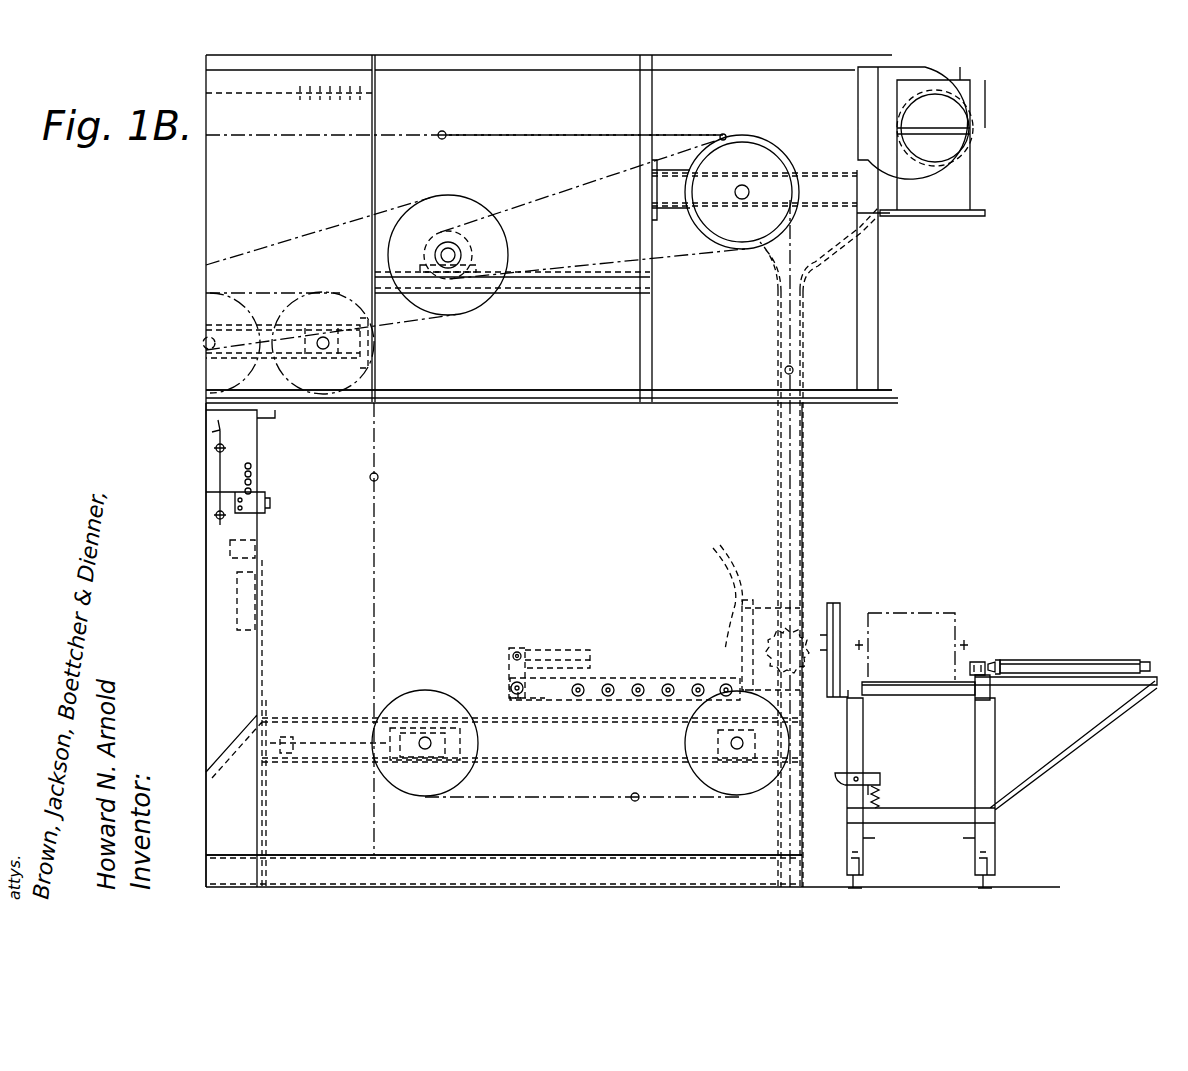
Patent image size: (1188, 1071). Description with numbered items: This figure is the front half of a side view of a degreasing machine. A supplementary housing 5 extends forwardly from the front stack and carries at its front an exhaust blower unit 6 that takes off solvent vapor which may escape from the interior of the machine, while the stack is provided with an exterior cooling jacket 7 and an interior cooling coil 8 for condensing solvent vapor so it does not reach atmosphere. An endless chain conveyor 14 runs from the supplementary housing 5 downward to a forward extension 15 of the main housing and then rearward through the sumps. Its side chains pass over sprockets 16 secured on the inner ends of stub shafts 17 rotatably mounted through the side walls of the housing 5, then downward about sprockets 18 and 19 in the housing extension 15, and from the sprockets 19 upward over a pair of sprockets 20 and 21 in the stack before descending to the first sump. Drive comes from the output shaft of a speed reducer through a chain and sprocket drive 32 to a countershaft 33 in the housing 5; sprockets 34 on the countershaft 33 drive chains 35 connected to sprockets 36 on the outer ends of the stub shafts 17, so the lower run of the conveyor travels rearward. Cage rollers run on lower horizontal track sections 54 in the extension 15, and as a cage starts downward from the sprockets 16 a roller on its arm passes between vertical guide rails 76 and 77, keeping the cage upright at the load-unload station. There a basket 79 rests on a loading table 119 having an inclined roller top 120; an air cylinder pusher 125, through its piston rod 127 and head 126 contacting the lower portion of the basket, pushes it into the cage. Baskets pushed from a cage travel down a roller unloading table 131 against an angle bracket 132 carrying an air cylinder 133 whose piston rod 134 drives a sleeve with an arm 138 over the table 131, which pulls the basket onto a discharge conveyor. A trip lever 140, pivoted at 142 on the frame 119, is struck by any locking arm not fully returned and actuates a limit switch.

The supplementary housing 5 is at (880, 272).
The exhaust blower unit 6 is at (985, 80).
The exterior cooling jacket 7 is at (268, 492).
The interior cooling coil 8 is at (255, 486).
The endless chain conveyor 14 is at (544, 130).
The forward extension of housing 15 is at (673, 405).
The sprockets 16 is at (756, 158).
The stub shafts 17 is at (748, 199).
The sprockets 18 is at (706, 796).
The sprockets 19 is at (452, 796).
The sprockets 20 is at (326, 296).
The sprockets 21 is at (226, 297).
The chain and sprocket drive 32 is at (330, 230).
The countershaft 33 is at (462, 258).
The sprockets 34 is at (456, 198).
The chains 35 is at (604, 186).
The sprockets 36 is at (718, 138).
The lower horizontal track sections 54 is at (600, 770).
The vertical guide rail 76 is at (776, 346).
The vertical guide rail 77 is at (801, 345).
The basket 79 is at (912, 612).
The loading table 119 is at (992, 730).
The roller top 120 is at (915, 686).
The air cylinder pusher 125 is at (1118, 652).
The head of pusher 126 is at (979, 660).
The piston rod 127 is at (1002, 661).
The roller unloading table 131 is at (644, 698).
The angle bracket 132 is at (548, 697).
The air cylinder 133 is at (512, 672).
The piston rod 134 is at (509, 688).
The arm 138 is at (575, 650).
The trip lever 140 is at (850, 772).
The pivot 142 is at (866, 788).